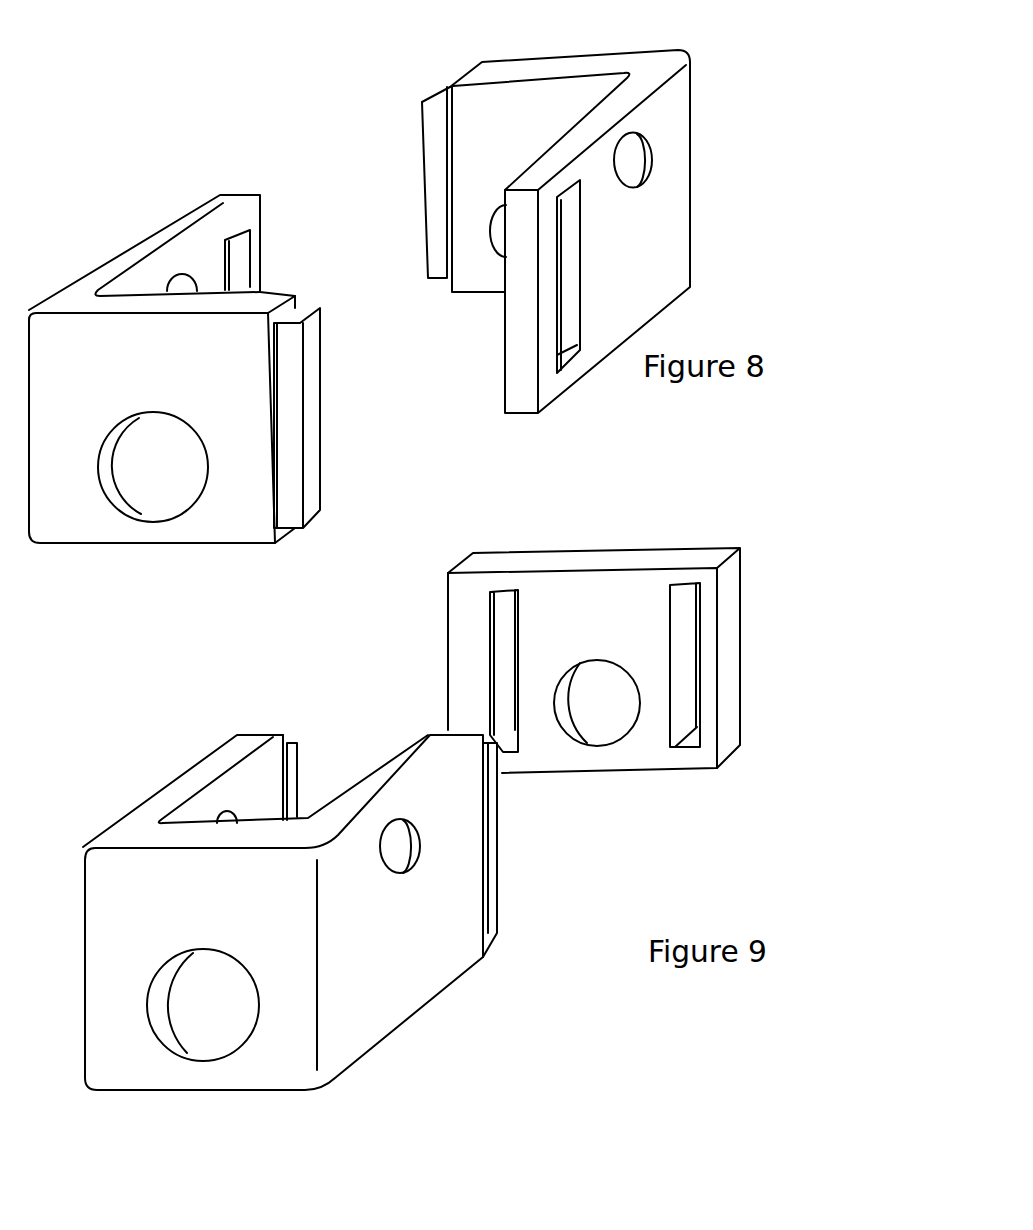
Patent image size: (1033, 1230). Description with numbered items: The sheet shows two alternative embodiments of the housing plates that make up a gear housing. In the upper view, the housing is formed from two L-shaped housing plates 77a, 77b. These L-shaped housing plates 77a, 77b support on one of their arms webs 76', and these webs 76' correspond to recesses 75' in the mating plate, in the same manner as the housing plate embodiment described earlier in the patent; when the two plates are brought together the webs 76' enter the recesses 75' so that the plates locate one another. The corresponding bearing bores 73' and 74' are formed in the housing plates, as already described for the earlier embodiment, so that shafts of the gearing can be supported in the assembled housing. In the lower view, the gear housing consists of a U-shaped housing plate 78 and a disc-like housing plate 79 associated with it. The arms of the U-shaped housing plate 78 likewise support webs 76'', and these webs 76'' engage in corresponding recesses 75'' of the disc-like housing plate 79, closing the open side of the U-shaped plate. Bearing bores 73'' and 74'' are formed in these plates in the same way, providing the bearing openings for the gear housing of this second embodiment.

In FIG. 8, the L-shaped housing plate 77a is at (85, 523).
In FIG. 8, the L-shaped housing plate 77b is at (653, 240).
In FIG. 9, the U-shaped housing plate 78 is at (115, 1030).
In FIG. 9, the disc-like housing plate 79 is at (637, 643).
In FIG. 8, the bearing bore 73' is at (708, 119).
In FIG. 9, the bearing bore 73'' is at (487, 849).
In FIG. 8, the bearing bore 74' is at (153, 540).
In FIG. 9, the bearing bore 74'' is at (420, 926).
In FIG. 8, the recess 75' is at (436, 293).
In FIG. 9, the recess 75'' is at (631, 601).
In FIG. 8, the web 76' is at (362, 337).
In FIG. 9, the web 76'' is at (428, 859).